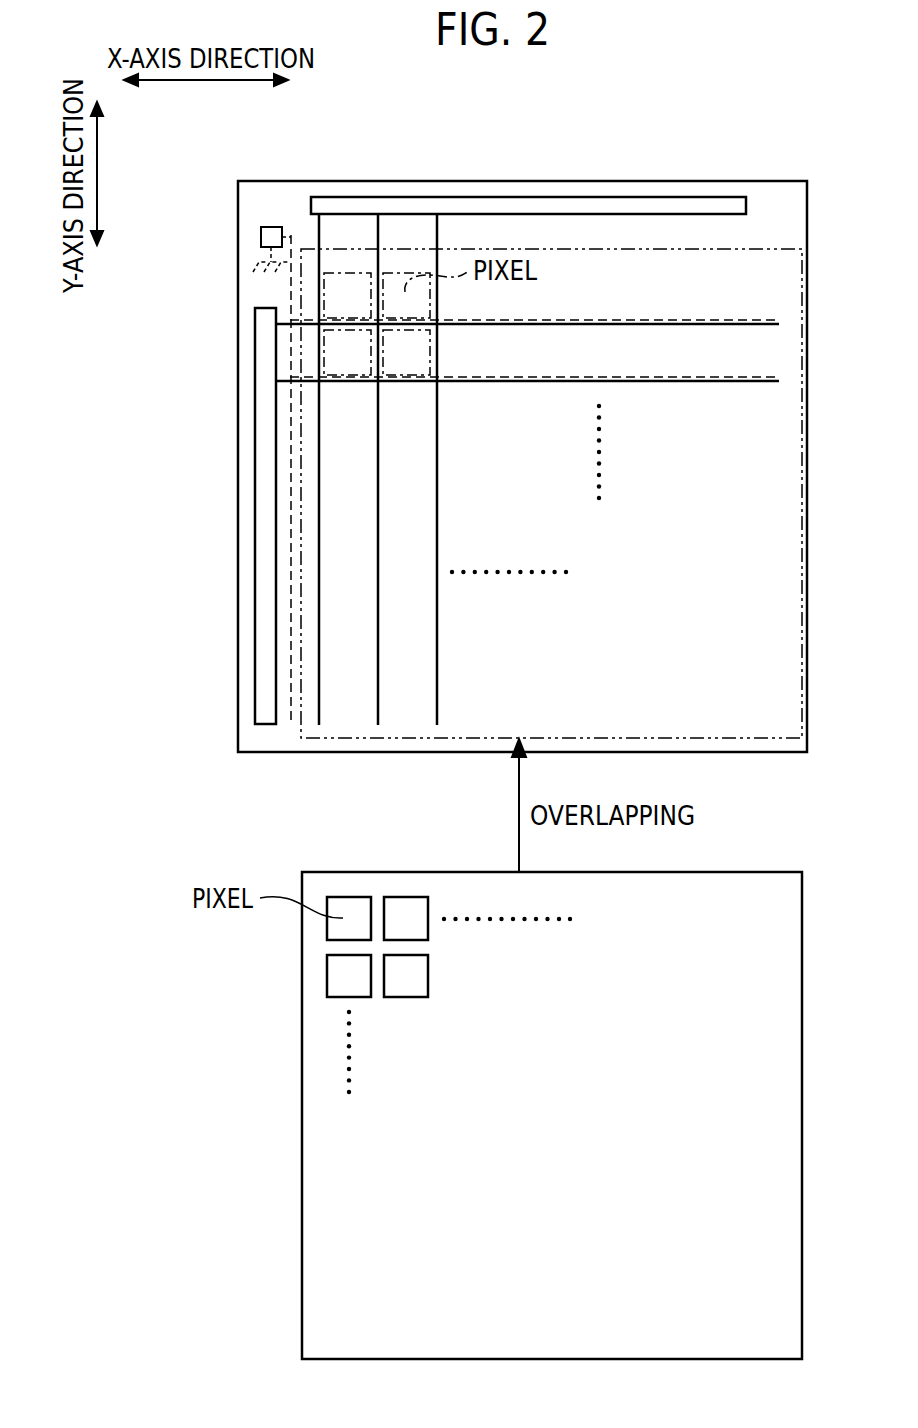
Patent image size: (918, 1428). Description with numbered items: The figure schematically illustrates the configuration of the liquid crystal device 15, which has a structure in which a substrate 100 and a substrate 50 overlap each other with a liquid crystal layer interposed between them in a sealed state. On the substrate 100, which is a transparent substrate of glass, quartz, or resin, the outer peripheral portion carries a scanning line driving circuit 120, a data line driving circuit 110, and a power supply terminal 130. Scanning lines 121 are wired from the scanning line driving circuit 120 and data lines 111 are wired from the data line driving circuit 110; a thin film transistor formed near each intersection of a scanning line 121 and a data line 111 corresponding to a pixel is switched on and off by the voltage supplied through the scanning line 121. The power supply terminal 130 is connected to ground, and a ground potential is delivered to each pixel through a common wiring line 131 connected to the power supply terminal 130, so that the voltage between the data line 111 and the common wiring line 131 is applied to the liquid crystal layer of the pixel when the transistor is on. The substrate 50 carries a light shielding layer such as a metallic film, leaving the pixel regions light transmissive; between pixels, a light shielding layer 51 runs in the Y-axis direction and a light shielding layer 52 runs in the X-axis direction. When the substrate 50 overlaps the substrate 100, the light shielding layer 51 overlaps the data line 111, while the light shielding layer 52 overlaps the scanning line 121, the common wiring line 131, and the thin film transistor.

The liquid crystal device 15 is at (155, 482).
The substrate 100 is at (237, 498).
The data line driving circuit 110 is at (527, 197).
The data line 111 is at (319, 227).
The scanning line driving circuit 120 is at (265, 412).
The scanning line 121 is at (508, 323).
The power supply terminal 130 is at (262, 238).
The common wiring line 131 is at (290, 288).
The substrate 50 is at (300, 586).
The light shielding layer 51 is at (379, 905).
The light shielding layer 52 is at (337, 947).